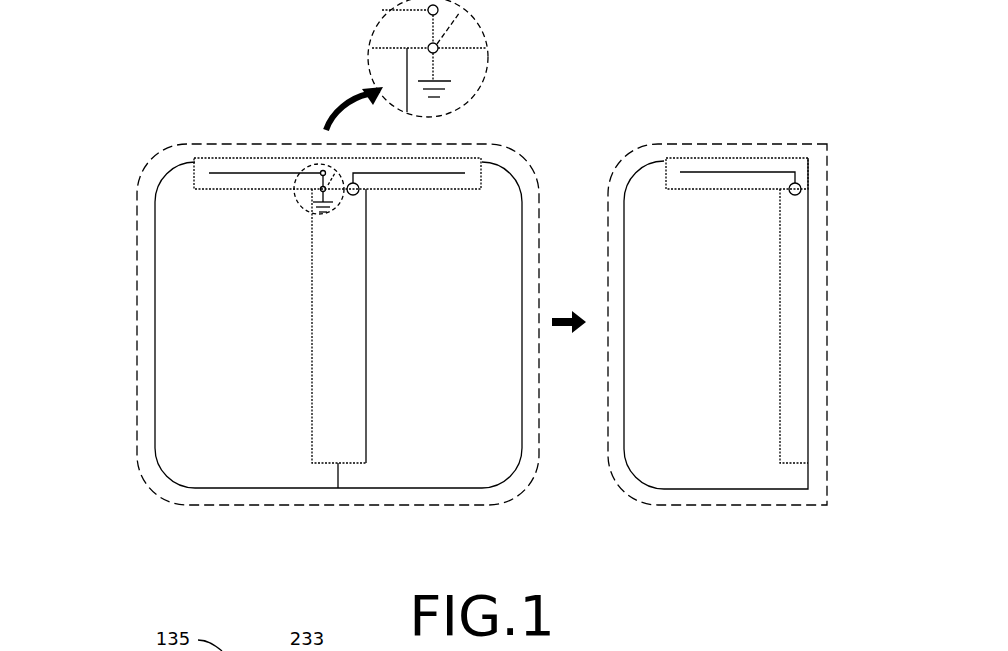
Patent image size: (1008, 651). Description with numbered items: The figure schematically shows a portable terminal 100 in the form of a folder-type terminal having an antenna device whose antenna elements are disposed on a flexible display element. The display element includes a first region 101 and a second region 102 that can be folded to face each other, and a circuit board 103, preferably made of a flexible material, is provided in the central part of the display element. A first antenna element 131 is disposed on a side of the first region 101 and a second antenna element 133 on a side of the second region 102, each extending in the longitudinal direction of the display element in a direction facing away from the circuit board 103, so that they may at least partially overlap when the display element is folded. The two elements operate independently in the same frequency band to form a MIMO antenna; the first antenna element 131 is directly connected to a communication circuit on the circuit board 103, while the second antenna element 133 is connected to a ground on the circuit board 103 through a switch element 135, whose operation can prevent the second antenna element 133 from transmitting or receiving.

The portable terminal 100 is at (133, 244).
The first region 101 is at (435, 468).
The second region 102 is at (247, 468).
The circuit board 103 is at (329, 455).
The first antenna element 131 is at (453, 172).
The second antenna element 133 is at (225, 173).
The switch element 135 is at (303, 170).